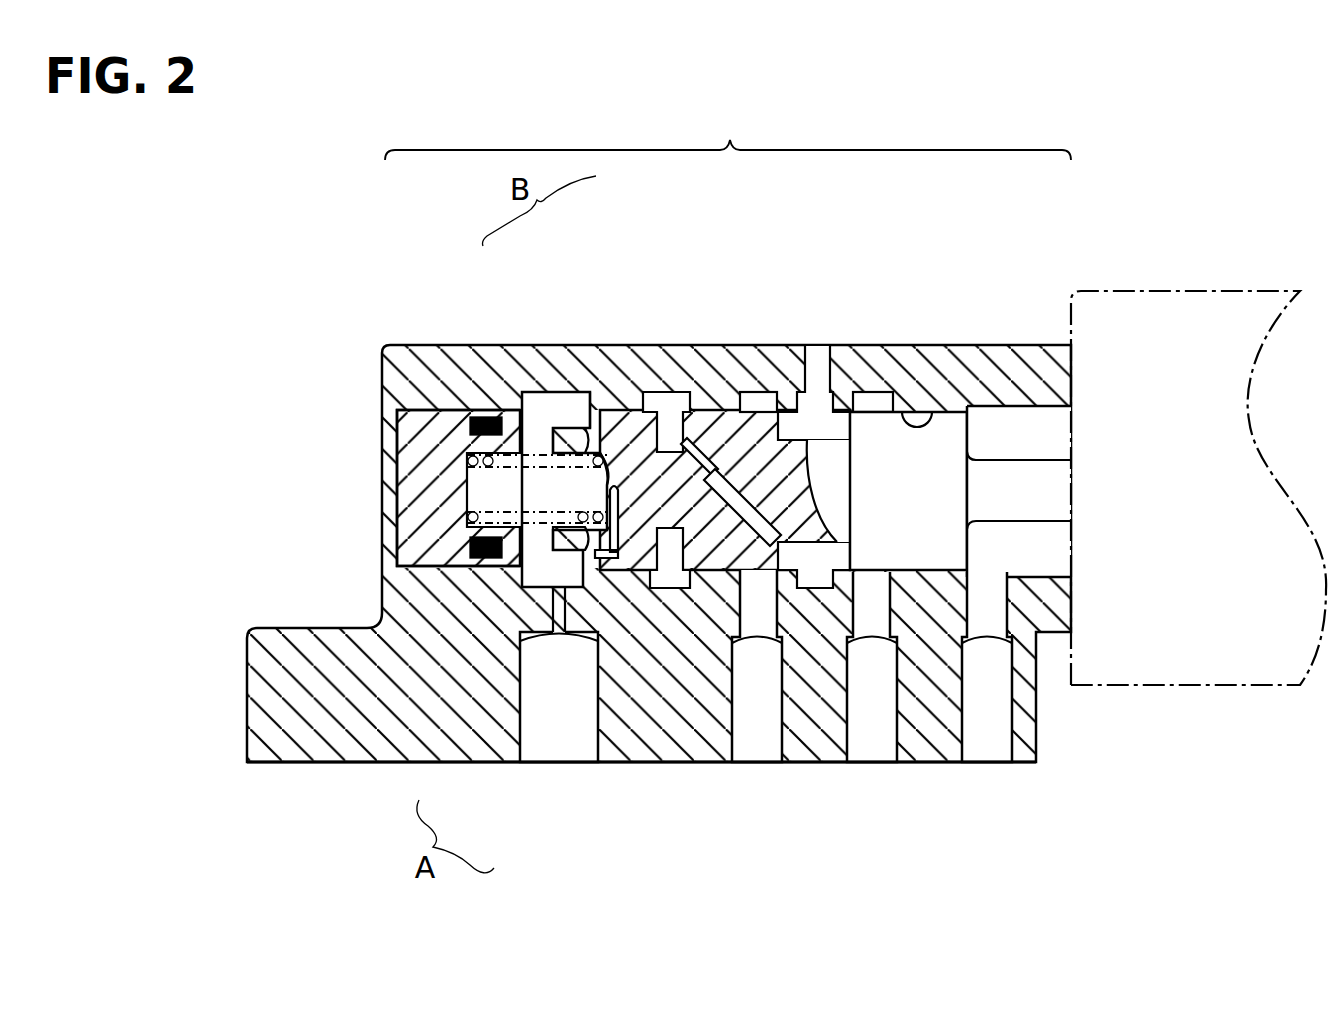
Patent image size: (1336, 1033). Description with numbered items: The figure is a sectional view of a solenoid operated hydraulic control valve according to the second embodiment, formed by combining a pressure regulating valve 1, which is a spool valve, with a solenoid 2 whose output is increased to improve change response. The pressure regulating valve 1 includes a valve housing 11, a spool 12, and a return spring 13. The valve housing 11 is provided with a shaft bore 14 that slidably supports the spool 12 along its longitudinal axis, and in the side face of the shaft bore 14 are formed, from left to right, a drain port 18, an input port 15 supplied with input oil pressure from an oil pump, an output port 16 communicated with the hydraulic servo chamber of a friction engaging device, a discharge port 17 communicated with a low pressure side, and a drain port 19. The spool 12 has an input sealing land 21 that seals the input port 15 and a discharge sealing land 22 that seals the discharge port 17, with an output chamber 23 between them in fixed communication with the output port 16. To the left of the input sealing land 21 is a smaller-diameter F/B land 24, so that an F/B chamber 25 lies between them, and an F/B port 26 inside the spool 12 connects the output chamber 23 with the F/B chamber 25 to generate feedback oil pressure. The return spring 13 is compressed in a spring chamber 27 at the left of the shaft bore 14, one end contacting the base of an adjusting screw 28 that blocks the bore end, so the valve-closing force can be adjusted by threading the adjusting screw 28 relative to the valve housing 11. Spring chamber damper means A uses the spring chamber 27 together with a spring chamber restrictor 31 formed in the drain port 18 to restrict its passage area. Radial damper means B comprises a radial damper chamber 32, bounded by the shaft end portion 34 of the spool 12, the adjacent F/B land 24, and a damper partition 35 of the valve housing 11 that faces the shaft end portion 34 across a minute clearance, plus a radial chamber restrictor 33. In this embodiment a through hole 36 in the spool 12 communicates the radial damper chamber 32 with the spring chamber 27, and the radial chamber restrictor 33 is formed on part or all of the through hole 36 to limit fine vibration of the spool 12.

The pressure regulating valve 1 is at (728, 130).
The solenoid 2 is at (1137, 282).
The valve housing 11 is at (430, 372).
The spool 12 is at (835, 452).
The return spring 13 is at (493, 407).
The shaft bore 14 is at (920, 410).
The input port 15 is at (752, 740).
The output port 16 is at (812, 362).
The discharge port 17 is at (870, 740).
The drain port 18 is at (563, 745).
The drain port 19 is at (985, 742).
The input sealing land 21 is at (703, 412).
The discharge sealing land 22 is at (877, 415).
The output chamber 23 is at (812, 560).
The F/B land 24 is at (646, 392).
The F/B chamber 25 is at (668, 400).
The F/B port 26 is at (742, 493).
The spring chamber 27 is at (537, 560).
The adjusting screw 28 is at (420, 463).
The spring chamber restrictor 31 is at (556, 603).
The radial damper chamber 32 is at (603, 418).
The radial chamber restrictor 33 is at (588, 422).
The shaft end portion 34 is at (563, 428).
The damper partition 35 is at (618, 560).
The through hole 36 is at (537, 409).